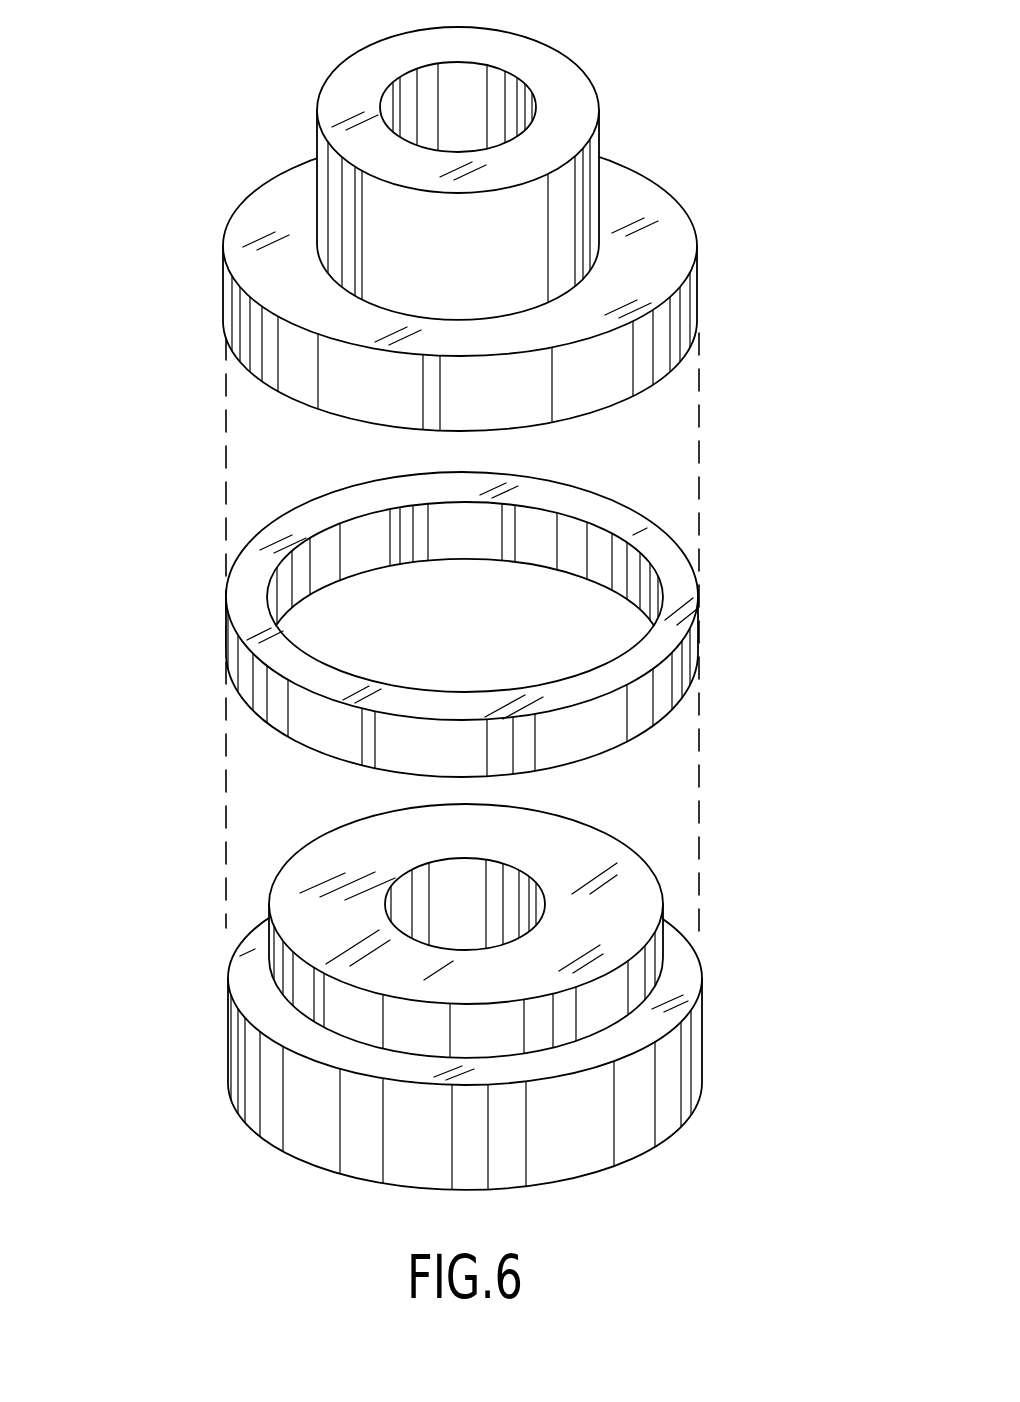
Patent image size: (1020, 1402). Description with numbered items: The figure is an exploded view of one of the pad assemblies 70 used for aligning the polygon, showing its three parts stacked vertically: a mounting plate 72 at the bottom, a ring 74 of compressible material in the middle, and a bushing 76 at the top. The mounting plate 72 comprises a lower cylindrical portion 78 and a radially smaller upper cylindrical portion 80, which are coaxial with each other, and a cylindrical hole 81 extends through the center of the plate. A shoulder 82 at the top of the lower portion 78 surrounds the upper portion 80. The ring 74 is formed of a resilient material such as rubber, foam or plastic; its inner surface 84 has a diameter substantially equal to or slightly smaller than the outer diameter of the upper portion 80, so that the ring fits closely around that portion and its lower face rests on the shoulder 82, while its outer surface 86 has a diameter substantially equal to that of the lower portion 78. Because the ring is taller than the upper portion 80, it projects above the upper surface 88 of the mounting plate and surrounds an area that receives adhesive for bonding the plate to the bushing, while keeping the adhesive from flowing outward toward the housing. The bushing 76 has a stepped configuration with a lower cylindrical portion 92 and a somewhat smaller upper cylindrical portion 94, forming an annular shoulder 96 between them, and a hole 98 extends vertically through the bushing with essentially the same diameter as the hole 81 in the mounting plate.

The pad assembly 70 is at (448, 613).
The mounting plate 72 is at (497, 998).
The ring 74 is at (533, 618).
The bushing 76 is at (515, 233).
The lower cylindrical portion 78 is at (235, 1090).
The upper cylindrical portion 80 is at (265, 940).
The cylindrical hole 81 is at (467, 889).
The shoulder 82 is at (253, 992).
The inner surface 84 is at (542, 518).
The outer surface 86 is at (668, 716).
The upper surface 88 is at (341, 847).
The lower cylindrical portion 92 is at (673, 338).
The upper cylindrical portion 94 is at (317, 140).
The annular shoulder 96 is at (633, 178).
The hole 98 is at (422, 83).